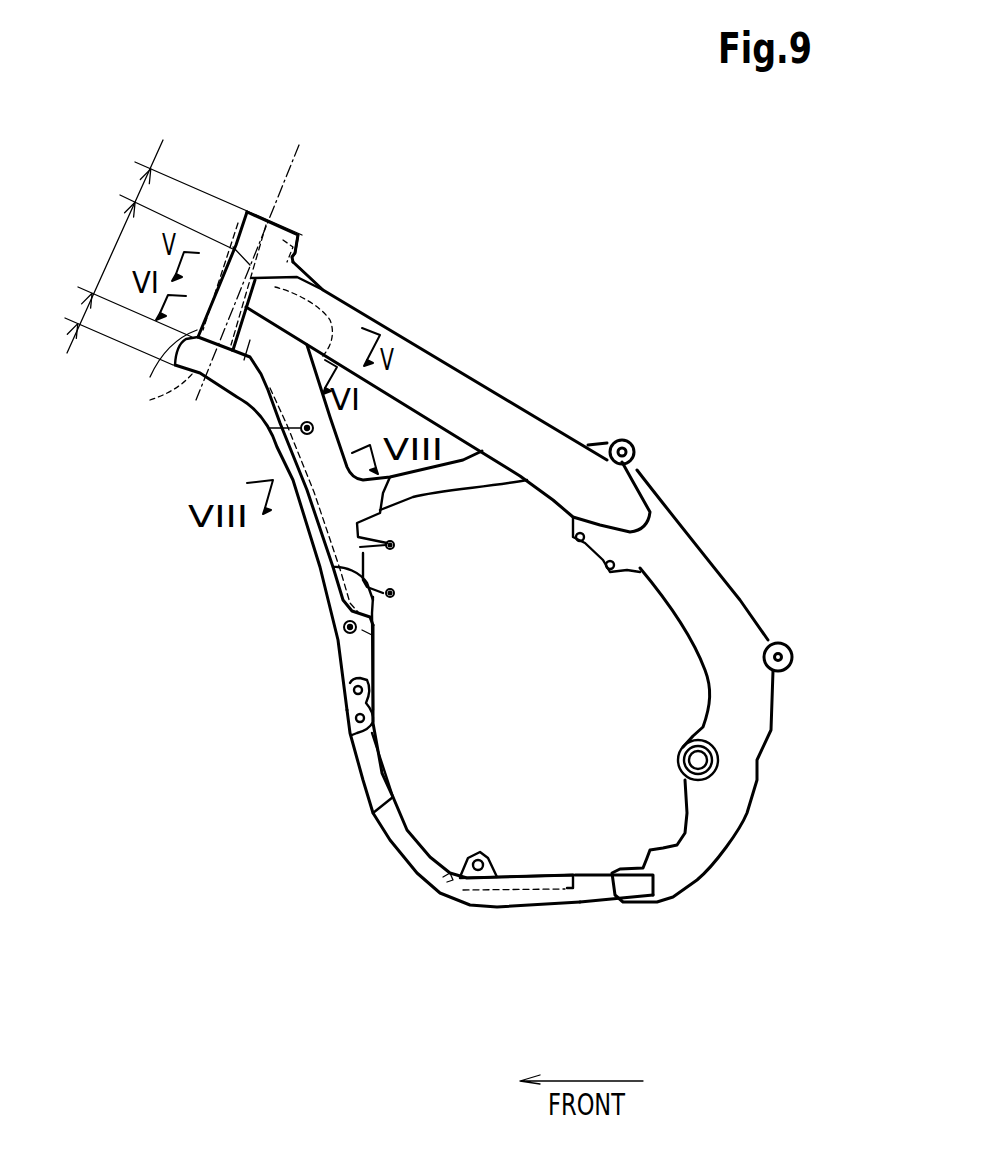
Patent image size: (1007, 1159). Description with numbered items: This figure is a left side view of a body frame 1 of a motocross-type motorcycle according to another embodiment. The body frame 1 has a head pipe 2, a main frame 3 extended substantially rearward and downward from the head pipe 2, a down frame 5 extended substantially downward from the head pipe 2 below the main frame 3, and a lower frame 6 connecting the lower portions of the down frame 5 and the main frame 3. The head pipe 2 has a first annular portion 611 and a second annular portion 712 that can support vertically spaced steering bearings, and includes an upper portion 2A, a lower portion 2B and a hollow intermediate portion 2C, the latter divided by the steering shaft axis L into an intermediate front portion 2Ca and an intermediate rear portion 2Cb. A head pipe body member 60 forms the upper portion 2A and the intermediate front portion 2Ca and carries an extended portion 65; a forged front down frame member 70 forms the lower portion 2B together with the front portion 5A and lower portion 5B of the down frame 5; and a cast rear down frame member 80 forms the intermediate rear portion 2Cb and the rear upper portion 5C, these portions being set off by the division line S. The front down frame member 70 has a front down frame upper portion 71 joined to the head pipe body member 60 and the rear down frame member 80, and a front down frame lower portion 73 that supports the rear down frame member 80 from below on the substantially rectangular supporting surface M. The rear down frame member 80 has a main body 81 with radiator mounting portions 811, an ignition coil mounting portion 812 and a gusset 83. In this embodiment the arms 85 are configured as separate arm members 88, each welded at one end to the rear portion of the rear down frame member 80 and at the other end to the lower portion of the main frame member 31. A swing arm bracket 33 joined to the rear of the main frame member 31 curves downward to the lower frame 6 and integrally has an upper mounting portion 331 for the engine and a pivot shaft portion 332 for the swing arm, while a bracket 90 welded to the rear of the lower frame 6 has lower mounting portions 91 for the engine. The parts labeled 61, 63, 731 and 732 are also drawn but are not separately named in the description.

The body frame 1 is at (527, 193).
The head pipe 2 is at (313, 178).
The upper portion 2A is at (133, 180).
The lower portion 2B is at (83, 300).
The intermediate portion 2C is at (113, 253).
The intermediate front portion 2Ca is at (233, 247).
The intermediate rear portion 2Cb is at (250, 340).
The axis L is at (297, 168).
The main frame 3 is at (650, 385).
The main frame member 31 is at (488, 397).
The swing arm bracket 33 is at (687, 543).
The upper mounting portion 331 is at (593, 548).
The pivot shaft portion 332 is at (678, 760).
The down frame 5 is at (245, 578).
The front portion 5A is at (317, 550).
The lower portion 5B is at (360, 668).
The rear upper portion 5C is at (328, 445).
The lower frame 6 is at (407, 870).
The head pipe body member 60 is at (296, 200).
The bracket plate 61 is at (297, 247).
The first annular portion 611 is at (310, 257).
The lower flange 63 is at (185, 372).
The extended portion 65 is at (308, 272).
The front down frame member 70 is at (355, 660).
The front down frame upper portion 71 is at (264, 471).
The second annular portion 712 is at (170, 398).
The front down frame lower portion 73 is at (334, 689).
The mounting holes of reinforcing plate 731 is at (350, 707).
The fastening bolt 732 is at (343, 627).
The rear down frame member 80 is at (262, 395).
The main body 81 is at (330, 507).
The radiator mounting portion 811 is at (293, 420).
The ignition coil mounting portion 812 is at (392, 549).
The gusset 83 is at (330, 297).
The arm 85 is at (443, 483).
The arm member 88 is at (453, 495).
The bracket 90 is at (478, 840).
The lower mounting portion 91 is at (463, 880).
The division line S is at (373, 613).
The supporting surface M is at (363, 633).